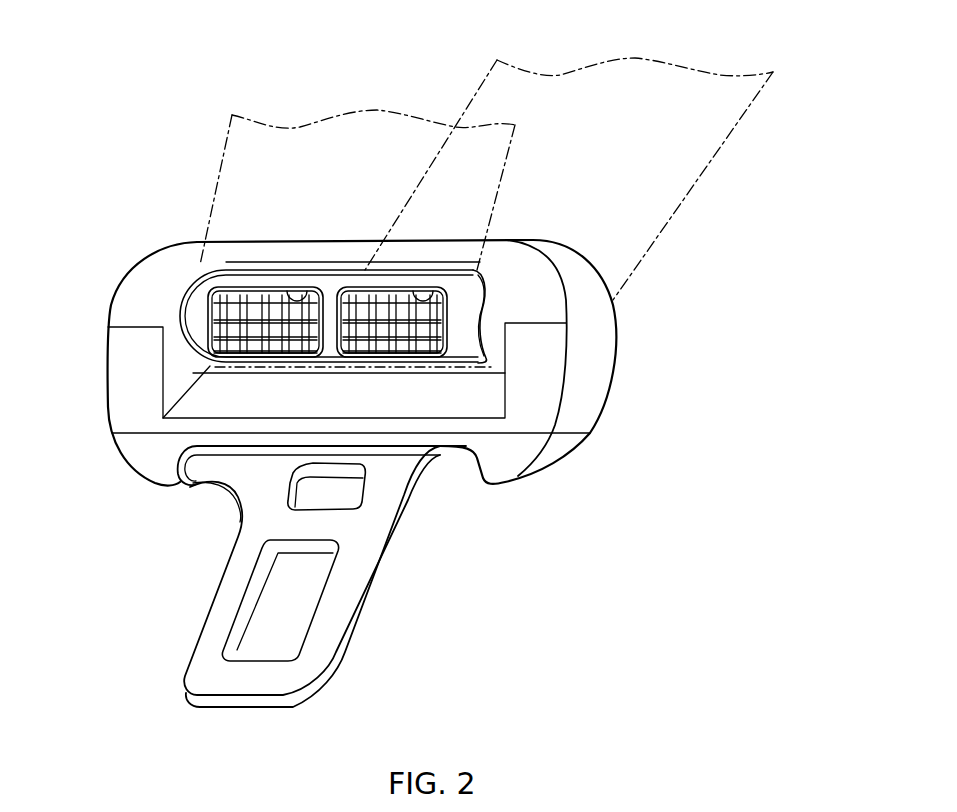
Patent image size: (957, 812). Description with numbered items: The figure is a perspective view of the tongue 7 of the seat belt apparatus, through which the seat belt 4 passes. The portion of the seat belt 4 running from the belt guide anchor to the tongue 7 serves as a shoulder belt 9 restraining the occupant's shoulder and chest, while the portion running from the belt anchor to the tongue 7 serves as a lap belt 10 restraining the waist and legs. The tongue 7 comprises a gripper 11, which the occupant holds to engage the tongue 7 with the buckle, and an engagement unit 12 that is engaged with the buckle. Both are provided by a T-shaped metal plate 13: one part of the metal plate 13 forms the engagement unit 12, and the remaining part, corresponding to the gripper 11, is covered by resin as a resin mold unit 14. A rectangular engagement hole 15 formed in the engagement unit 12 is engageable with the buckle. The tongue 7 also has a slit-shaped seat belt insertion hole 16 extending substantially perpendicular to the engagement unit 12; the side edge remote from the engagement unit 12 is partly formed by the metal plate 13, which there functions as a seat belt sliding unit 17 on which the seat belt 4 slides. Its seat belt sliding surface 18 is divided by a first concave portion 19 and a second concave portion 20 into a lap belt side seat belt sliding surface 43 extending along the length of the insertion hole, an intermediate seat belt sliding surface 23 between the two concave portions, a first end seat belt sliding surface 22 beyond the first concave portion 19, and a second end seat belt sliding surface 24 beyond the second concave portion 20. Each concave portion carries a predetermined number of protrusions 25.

The seat belt 4 is at (477, 86).
The tongue 7 is at (440, 559).
The shoulder belt 9 is at (708, 180).
The lap belt 10 is at (227, 157).
The gripper 11 is at (548, 297).
The engagement unit 12 is at (312, 657).
The metal plate 13 is at (197, 333).
The resin mold unit 14 is at (592, 402).
The engagement hole 15 is at (322, 597).
The seat belt insertion hole 16 is at (398, 365).
The seat belt sliding unit 17 is at (278, 375).
The seat belt sliding surface 18 is at (455, 313).
The first concave portion 19 is at (297, 296).
The second concave portion 20 is at (440, 288).
The first end seat belt sliding surface 22 is at (217, 281).
The intermediate seat belt sliding surface 23 is at (333, 346).
The second end seat belt sliding surface 24 is at (465, 348).
The protrusions 25 is at (270, 290).
The lap belt side seat belt sliding surface 43 is at (416, 258).